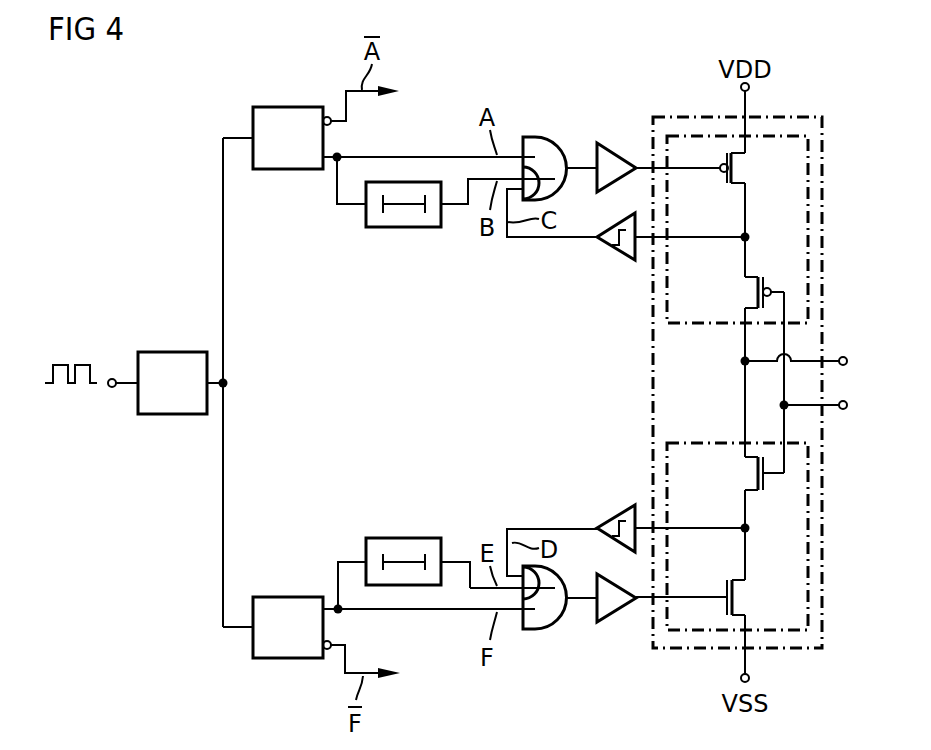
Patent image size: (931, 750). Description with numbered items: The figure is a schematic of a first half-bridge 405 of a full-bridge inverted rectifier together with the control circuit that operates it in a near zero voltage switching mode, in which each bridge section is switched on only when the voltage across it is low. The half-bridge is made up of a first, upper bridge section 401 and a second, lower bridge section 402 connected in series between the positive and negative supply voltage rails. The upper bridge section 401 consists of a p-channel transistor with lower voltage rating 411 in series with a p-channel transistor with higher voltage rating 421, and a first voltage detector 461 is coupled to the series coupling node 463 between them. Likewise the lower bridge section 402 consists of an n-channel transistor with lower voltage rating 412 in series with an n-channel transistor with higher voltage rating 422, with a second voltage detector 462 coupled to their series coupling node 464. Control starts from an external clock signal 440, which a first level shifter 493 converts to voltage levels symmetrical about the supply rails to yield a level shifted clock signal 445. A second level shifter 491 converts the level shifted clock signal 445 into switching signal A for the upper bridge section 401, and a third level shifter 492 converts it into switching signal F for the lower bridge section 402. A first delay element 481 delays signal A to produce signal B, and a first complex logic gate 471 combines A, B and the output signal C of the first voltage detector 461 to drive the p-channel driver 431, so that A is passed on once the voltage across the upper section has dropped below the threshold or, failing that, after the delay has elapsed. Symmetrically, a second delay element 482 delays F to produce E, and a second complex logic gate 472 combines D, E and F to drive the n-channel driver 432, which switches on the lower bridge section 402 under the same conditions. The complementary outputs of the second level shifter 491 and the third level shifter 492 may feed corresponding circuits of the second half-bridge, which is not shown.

The first, upper bridge section 401 is at (788, 130).
The second, lower bridge section 402 is at (717, 441).
The first half-bridge 405 is at (653, 368).
The p-channel transistor with lower voltage rating 411 is at (738, 167).
The n-channel transistor with lower voltage rating 412 is at (738, 597).
The p-channel transistor with higher voltage rating 421 is at (756, 293).
The n-channel transistor with higher voltage rating 422 is at (754, 474).
The p-channel driver 431 is at (618, 143).
The n-channel driver 432 is at (615, 622).
The external clock signal 440 is at (80, 363).
The level shifted clock signal 445 is at (227, 382).
The first voltage detector 461 is at (612, 253).
The second voltage detector 462 is at (612, 515).
The series coupling node 463 is at (741, 241).
The series coupling node 464 is at (741, 525).
The first complex logic gate 471 is at (550, 137).
The second complex logic gate 472 is at (548, 630).
The first delay element 481 is at (403, 228).
The second delay element 482 is at (403, 538).
The second level shifter 491 is at (288, 107).
The third level shifter 492 is at (289, 597).
The first level shifter 493 is at (172, 352).